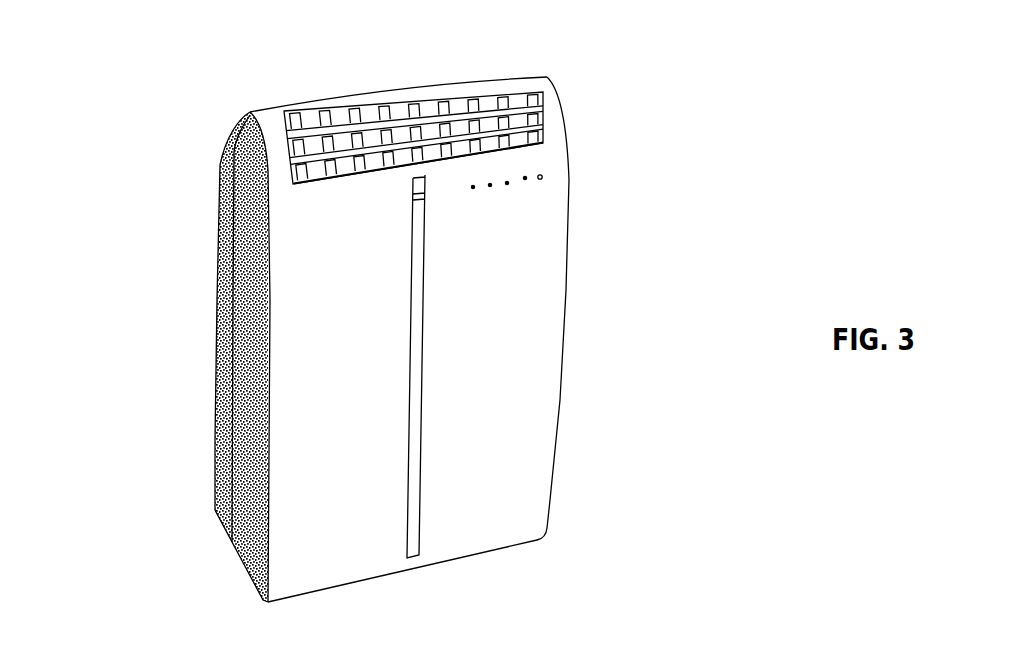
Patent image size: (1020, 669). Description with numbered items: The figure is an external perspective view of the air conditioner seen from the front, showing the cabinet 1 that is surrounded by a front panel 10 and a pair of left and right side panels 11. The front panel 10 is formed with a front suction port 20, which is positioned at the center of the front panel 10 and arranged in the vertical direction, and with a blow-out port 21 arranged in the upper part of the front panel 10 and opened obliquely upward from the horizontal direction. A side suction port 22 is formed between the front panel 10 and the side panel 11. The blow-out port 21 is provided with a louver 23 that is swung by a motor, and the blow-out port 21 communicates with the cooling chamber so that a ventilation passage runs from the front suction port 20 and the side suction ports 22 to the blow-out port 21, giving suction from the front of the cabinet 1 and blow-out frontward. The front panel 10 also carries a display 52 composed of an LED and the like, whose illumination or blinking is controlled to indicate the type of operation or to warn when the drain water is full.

The cabinet 1 is at (392, 301).
The front panel 10 is at (522, 435).
The side panel 11 is at (247, 405).
The front suction port 20 is at (417, 418).
The blow-out port 21 is at (481, 92).
The side suction port 22 is at (167, 357).
The louver 23 is at (388, 148).
The display 52 is at (542, 175).